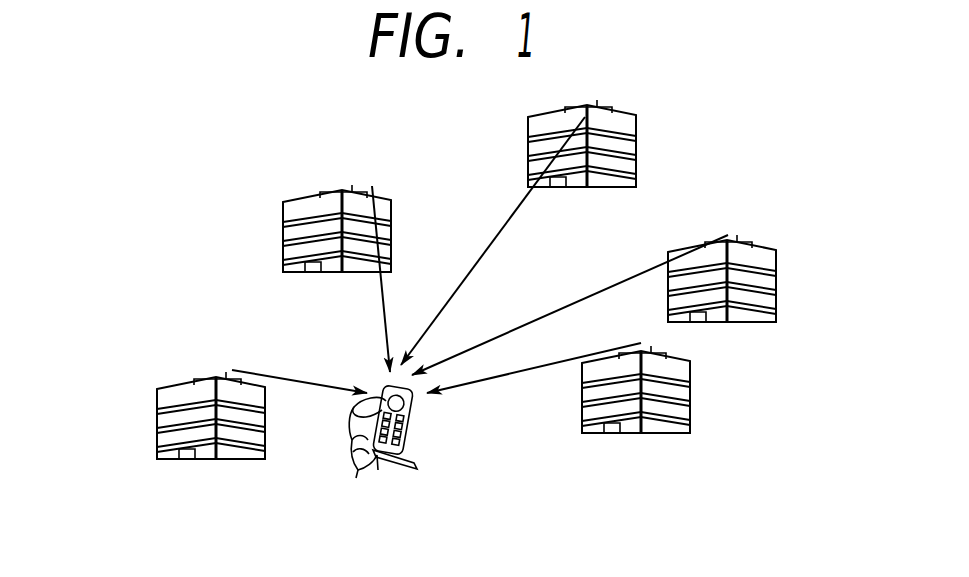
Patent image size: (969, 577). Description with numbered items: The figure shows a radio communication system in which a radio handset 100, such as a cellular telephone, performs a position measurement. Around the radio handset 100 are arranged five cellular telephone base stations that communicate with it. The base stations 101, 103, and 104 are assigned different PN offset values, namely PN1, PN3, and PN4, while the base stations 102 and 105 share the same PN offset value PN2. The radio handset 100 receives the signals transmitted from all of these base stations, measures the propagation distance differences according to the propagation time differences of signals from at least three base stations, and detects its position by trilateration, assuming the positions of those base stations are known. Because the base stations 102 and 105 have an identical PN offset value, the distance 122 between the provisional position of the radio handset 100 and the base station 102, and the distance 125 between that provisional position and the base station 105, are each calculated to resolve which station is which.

The radio handset 100 is at (413, 452).
The base station 101 is at (636, 130).
The base station 102 is at (778, 260).
The base station 103 is at (690, 367).
The base station 104 is at (285, 208).
The base station 105 is at (158, 392).
The distance 122 is at (590, 295).
The distance 125 is at (297, 380).